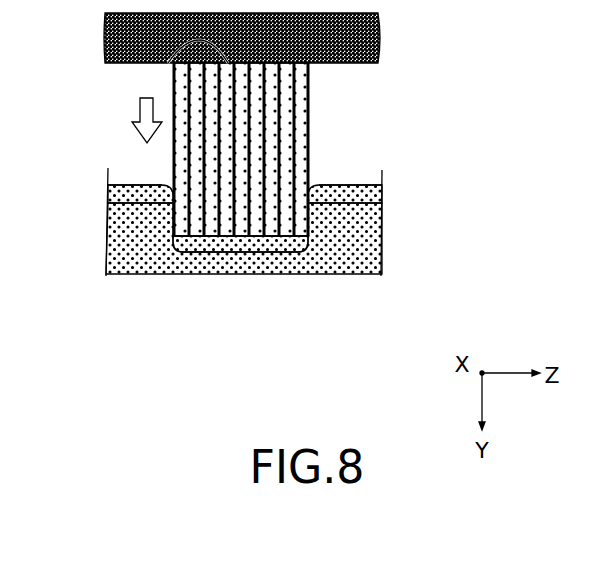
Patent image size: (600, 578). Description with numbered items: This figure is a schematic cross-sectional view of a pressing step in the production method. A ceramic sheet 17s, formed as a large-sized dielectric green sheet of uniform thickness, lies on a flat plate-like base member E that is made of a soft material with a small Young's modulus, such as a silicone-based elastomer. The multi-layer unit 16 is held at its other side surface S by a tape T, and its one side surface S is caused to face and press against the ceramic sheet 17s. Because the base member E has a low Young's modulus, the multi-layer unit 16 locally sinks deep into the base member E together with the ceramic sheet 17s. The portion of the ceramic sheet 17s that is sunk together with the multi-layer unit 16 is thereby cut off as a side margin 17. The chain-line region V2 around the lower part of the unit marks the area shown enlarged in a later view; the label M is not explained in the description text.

The tape T is at (365, 45).
The side surface S is at (170, 65).
The multi-layer unit 16 is at (360, 122).
The metal layer M is at (173, 150).
The ceramic sheet 17s is at (362, 193).
The base member E is at (365, 243).
The side margin 17 is at (240, 248).
The region V2 is at (323, 190).